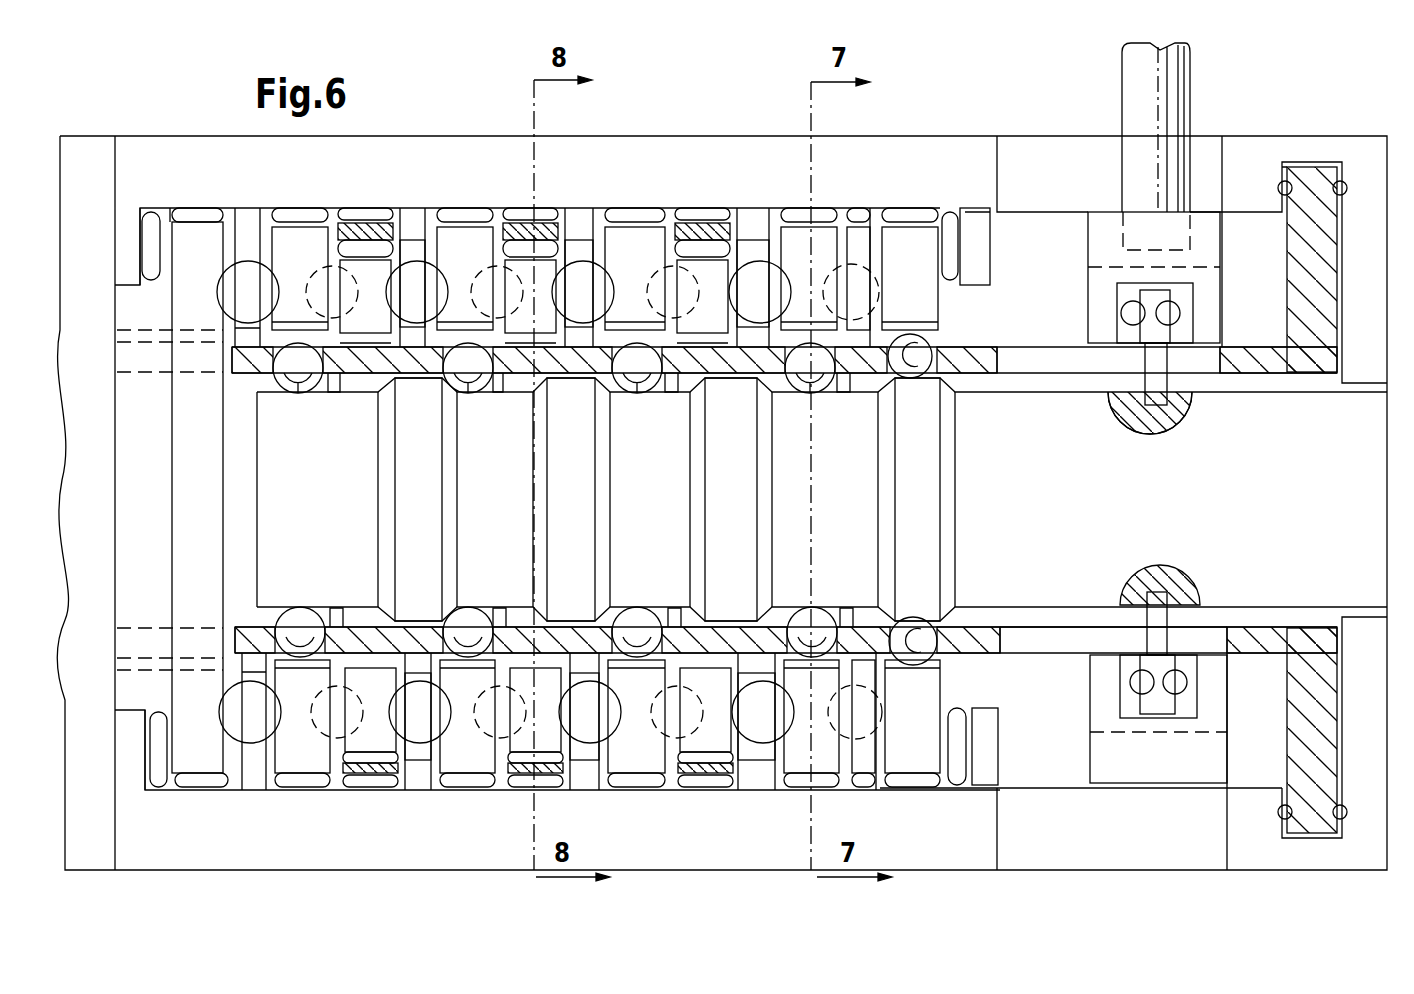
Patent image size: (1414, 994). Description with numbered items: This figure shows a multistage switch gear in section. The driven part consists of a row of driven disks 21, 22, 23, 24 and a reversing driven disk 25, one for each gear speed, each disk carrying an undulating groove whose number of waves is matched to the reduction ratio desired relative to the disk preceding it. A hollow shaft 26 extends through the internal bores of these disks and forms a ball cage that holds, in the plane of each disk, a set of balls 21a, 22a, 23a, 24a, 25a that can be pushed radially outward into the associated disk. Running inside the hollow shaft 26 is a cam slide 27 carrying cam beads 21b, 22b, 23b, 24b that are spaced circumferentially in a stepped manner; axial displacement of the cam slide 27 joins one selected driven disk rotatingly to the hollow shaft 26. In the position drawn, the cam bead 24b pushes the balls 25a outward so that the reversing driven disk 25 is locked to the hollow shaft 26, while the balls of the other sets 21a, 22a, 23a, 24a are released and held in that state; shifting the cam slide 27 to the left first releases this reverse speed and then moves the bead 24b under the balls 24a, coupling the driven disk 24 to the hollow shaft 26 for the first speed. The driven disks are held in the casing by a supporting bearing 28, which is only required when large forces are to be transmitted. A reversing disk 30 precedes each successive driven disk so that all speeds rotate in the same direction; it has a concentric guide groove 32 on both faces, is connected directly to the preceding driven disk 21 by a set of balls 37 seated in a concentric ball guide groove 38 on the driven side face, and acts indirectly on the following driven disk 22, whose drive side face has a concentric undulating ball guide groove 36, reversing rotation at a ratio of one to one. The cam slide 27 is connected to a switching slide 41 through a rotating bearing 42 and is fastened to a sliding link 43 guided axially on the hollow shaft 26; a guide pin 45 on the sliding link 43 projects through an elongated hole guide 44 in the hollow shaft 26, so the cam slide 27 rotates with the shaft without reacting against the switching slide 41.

The driven disk 21 is at (300, 235).
The driven disk 22 is at (458, 232).
The driven disk 23 is at (630, 235).
The driven disk 24 is at (808, 252).
The reversing driven disk 25 is at (912, 238).
The set of balls 21a is at (296, 382).
The set of balls 22a is at (472, 390).
The set of balls 23a is at (640, 382).
The set of balls 24a is at (810, 390).
The set of balls 25a is at (928, 350).
The cam bead 21b is at (400, 422).
The cam bead 22b is at (553, 432).
The cam bead 23b is at (710, 415).
The cam bead 24b is at (922, 402).
The hollow shaft 26 is at (986, 643).
The cam slide 27 is at (772, 568).
The supporting bearing 28 is at (636, 790).
The reversing disk 30 is at (372, 790).
The concentric guide groove 32 is at (350, 785).
The undulating ball guide groove 36 is at (455, 708).
The set of balls 37 is at (335, 702).
The concentric ball guide groove 38 is at (302, 710).
The switching slide 41 is at (1172, 118).
The rotating bearing 42 is at (1176, 313).
The sliding link 43 is at (1196, 770).
The elongated hole guide 44 is at (1050, 632).
The guide pin 45 is at (1122, 603).